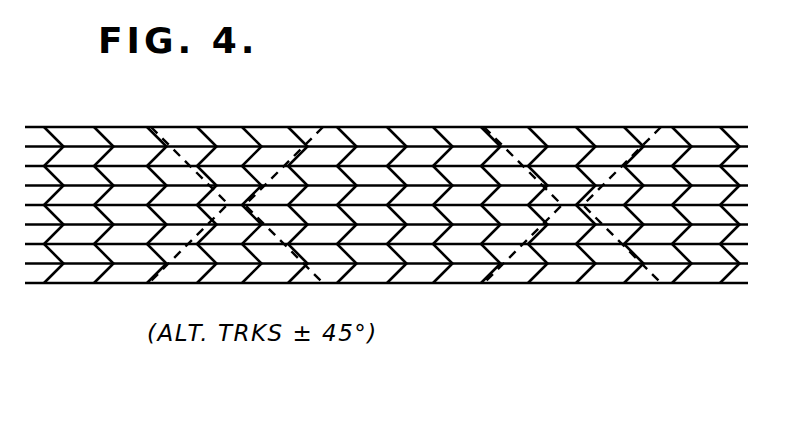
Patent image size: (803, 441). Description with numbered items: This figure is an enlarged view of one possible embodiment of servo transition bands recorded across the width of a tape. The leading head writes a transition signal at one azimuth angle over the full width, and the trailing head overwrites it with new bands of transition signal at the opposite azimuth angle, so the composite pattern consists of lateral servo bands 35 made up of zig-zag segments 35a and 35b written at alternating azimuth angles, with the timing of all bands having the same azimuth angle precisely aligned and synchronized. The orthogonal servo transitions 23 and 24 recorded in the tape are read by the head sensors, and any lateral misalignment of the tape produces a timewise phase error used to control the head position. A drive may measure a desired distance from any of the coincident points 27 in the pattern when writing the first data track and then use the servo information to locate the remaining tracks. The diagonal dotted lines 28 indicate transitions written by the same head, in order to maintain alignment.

The servo transition 23 is at (528, 254).
The servo transition 24 is at (590, 185).
The coincident point 27 is at (50, 226).
The alternate tracks at ±45° 28 is at (236, 173).
The lateral servo band 35 is at (379, 124).
The zig-zag segment 35a is at (390, 174).
The zig-zag segment 35b is at (387, 192).